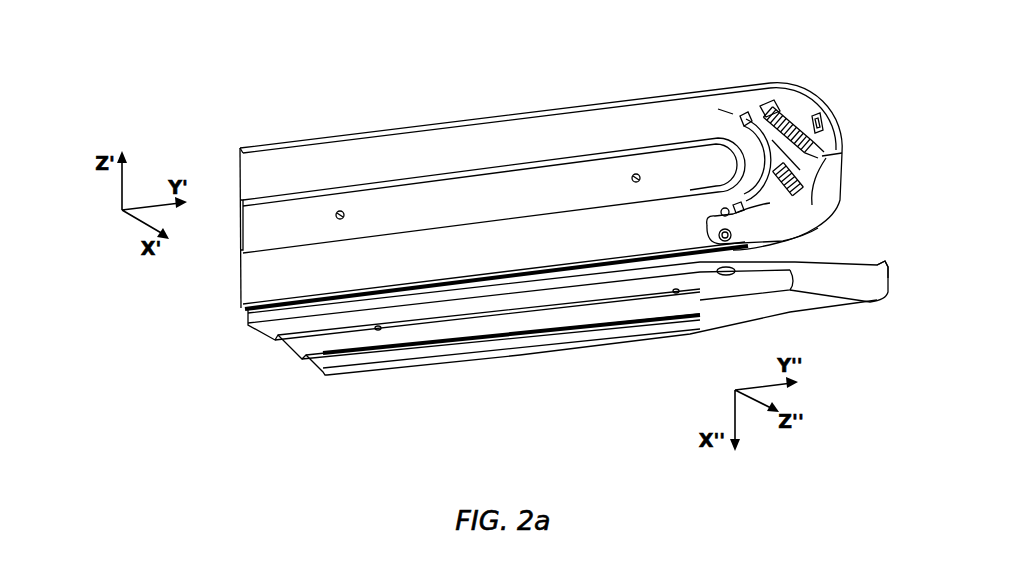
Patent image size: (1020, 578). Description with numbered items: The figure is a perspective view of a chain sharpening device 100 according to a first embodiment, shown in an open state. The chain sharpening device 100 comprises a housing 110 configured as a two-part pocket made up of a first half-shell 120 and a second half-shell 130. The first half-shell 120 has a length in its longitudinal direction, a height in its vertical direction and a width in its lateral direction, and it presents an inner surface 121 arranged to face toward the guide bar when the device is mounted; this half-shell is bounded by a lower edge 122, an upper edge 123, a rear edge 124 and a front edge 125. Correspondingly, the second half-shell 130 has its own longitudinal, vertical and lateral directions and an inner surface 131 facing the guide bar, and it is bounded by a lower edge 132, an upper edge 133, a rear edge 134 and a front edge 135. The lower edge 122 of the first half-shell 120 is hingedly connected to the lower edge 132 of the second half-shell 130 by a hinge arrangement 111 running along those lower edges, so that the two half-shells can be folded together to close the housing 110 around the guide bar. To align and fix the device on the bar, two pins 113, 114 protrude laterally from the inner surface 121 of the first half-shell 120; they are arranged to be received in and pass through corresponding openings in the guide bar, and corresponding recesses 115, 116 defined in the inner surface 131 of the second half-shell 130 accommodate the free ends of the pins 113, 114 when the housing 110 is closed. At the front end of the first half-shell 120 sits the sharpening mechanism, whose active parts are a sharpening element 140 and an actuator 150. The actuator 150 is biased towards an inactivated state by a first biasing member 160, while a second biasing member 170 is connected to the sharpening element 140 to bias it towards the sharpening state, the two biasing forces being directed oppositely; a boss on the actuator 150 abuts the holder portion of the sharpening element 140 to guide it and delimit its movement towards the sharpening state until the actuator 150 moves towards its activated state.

The chain sharpening device 100 is at (310, 110).
The housing 110 is at (192, 268).
The hinge arrangement 111 is at (519, 272).
The pin 113 is at (340, 221).
The pin 114 is at (636, 183).
The recess 115 is at (380, 328).
The recess 116 is at (676, 294).
The first half-shell 120 is at (531, 152).
The inner surface 121 is at (422, 203).
The lower edge 122 is at (353, 293).
The upper edge 123 is at (548, 107).
The rear edge 124 is at (240, 223).
The front edge 125 is at (843, 148).
The second half-shell 130 is at (497, 298).
The inner surface 131 is at (438, 320).
The lower edge 132 is at (240, 308).
The upper edge 133 is at (762, 310).
The rear edge 134 is at (307, 365).
The front edge 135 is at (880, 263).
The sharpening element 140 is at (788, 132).
The actuator 150 is at (820, 208).
The first biasing member 160 is at (822, 108).
The second biasing member 170 is at (795, 218).